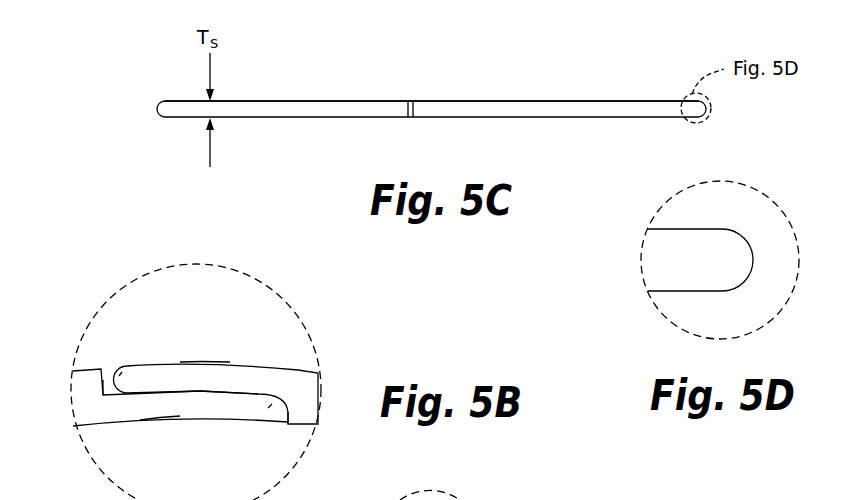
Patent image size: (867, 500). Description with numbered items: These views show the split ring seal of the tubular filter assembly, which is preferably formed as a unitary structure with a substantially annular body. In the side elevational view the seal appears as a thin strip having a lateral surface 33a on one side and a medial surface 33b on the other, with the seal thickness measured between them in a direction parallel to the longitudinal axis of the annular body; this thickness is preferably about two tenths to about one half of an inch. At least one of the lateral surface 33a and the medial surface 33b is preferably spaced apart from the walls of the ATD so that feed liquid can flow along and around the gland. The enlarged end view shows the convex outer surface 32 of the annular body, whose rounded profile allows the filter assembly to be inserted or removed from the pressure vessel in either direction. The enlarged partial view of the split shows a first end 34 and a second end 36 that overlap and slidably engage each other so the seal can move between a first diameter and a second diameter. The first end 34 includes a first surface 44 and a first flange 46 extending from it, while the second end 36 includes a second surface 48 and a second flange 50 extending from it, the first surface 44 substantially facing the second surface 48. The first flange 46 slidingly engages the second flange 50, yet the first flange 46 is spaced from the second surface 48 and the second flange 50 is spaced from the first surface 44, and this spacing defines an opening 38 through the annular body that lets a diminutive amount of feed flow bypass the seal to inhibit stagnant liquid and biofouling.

In FIG. 5D, the convex outer surface 32 is at (746, 248).
In FIG. 5C, the lateral surface 33a is at (547, 117).
In FIG. 5C, the medial surface 33b is at (500, 101).
In FIG. 5B, the first end 34 is at (99, 433).
In FIG. 5B, the second end 36 is at (302, 364).
In FIG. 5B, the opening 38 is at (124, 370).
In FIG. 5B, the first surface 44 is at (122, 385).
In FIG. 5B, the first flange 46 is at (163, 421).
In FIG. 5B, the second surface 48 is at (278, 408).
In FIG. 5B, the second flange 50 is at (217, 363).